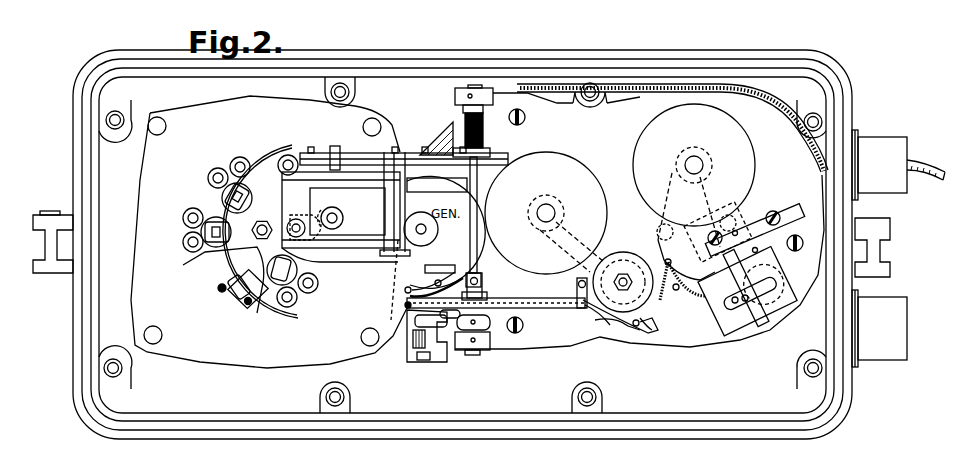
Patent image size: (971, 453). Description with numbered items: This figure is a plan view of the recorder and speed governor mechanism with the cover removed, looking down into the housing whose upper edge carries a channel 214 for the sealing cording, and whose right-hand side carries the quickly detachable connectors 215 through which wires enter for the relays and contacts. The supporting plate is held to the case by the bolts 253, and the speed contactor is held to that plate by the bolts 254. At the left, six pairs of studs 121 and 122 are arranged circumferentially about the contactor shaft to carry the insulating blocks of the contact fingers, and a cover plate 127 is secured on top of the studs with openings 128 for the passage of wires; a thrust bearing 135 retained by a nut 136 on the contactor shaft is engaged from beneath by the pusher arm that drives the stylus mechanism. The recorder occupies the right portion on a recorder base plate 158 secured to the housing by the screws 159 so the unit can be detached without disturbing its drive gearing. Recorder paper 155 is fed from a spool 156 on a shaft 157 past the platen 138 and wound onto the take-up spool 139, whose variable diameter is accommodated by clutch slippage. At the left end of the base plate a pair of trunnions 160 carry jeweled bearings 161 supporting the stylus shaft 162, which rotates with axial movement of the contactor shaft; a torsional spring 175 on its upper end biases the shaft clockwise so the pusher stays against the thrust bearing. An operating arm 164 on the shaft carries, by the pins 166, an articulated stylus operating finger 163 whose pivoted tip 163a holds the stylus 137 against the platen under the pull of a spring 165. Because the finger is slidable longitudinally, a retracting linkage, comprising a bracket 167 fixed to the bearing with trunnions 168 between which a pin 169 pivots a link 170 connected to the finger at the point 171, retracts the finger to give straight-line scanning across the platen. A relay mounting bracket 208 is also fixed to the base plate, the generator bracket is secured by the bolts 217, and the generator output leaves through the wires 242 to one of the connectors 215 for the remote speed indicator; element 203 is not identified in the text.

The stud 121 is at (182, 218).
The stud 122 is at (182, 243).
The cover plate 127 is at (310, 305).
The openings 128 is at (228, 208).
The thrust bearing 135 is at (296, 220).
The nut 136 is at (262, 223).
The stylus 137 is at (634, 333).
The platen 138 is at (622, 258).
The take-up spool 139 is at (662, 138).
The recorder paper 155 is at (648, 241).
The spool 156 is at (580, 172).
The shaft 157 is at (552, 208).
The recorder base plate 158 is at (694, 346).
The screws 159 is at (526, 118).
The trunnions 160 is at (463, 109).
The bearings 161 is at (455, 92).
The stylus shaft 162 is at (477, 190).
The stylus operating finger 163 is at (548, 308).
The pivoted tip 163a is at (600, 320).
The operating arm 164 is at (486, 298).
The spring 165 is at (612, 322).
The pins 166 is at (436, 278).
The bracket 167 is at (440, 330).
The trunnions 168 is at (420, 355).
The pin 169 is at (420, 364).
The link 170 is at (412, 338).
The point 171 is at (404, 305).
The torsional spring 175 is at (485, 134).
The carriage 203 is at (747, 274).
The bracket 208 is at (777, 205).
The channel 214 is at (832, 414).
The quickly detachable connectors 215 is at (886, 190).
The bolts 217 is at (428, 153).
The wires 242 is at (925, 165).
The bolts 253 is at (122, 112).
The bolts 254 is at (166, 126).